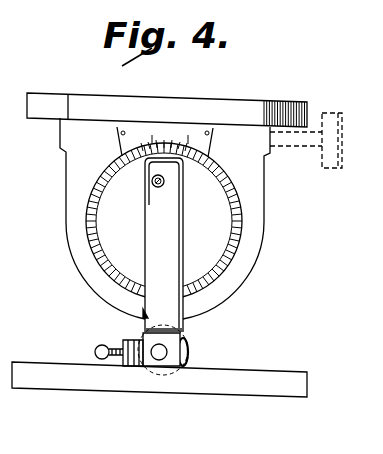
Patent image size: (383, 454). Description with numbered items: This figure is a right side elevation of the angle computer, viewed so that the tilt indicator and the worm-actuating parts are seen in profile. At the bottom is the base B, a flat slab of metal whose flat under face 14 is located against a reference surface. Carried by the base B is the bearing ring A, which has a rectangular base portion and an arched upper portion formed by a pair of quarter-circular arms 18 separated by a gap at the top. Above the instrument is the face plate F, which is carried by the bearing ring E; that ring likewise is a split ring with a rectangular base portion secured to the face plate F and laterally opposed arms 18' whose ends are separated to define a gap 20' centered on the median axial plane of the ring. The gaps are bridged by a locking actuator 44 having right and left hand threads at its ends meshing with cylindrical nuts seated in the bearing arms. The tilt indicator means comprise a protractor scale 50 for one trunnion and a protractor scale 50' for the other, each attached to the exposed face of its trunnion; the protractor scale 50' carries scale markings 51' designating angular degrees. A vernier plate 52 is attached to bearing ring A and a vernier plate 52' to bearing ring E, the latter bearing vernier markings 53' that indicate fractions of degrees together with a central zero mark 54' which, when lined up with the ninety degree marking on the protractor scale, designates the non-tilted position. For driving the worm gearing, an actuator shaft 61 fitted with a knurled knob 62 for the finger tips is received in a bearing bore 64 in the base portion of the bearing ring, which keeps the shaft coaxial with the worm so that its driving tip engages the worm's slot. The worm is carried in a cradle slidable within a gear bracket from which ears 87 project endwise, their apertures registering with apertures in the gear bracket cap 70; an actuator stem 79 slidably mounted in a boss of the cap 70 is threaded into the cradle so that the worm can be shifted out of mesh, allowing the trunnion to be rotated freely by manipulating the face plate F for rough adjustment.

The face plate F is at (172, 96).
The bearing ring E is at (173, 218).
The arms 18' is at (165, 218).
The scale markings 51' is at (134, 221).
The protractor scale 50' is at (137, 218).
The zero mark 54' is at (165, 131).
The vernier markings 53' is at (138, 111).
The vernier plate 52' is at (210, 111).
The actuator shaft 61 is at (292, 148).
The knurled knob 62 is at (333, 113).
The quarter-circular arms 18 is at (162, 245).
The bearing ring A is at (146, 250).
The locking actuator 44 is at (155, 184).
The gap 20' is at (117, 325).
The protractor scale 50 is at (203, 322).
The vernier plate 52 is at (176, 350).
The bearing bore 64 is at (158, 359).
The ears 87 is at (138, 363).
The gear bracket cap 70 is at (128, 367).
The actuator stem 79 is at (95, 352).
The under face 14 is at (155, 381).
The base B is at (25, 357).